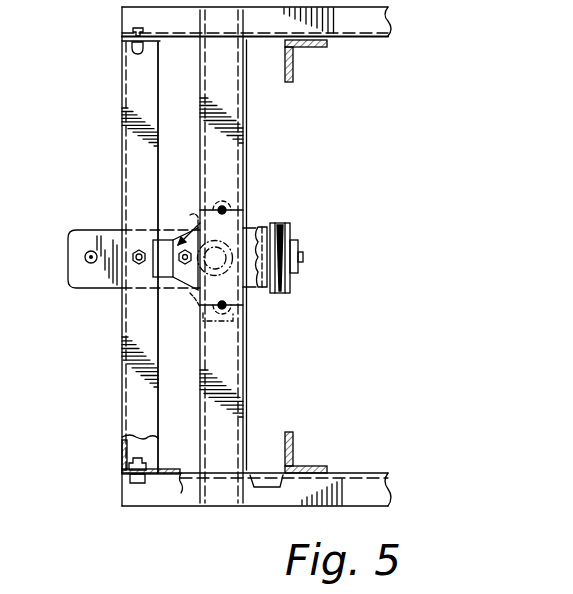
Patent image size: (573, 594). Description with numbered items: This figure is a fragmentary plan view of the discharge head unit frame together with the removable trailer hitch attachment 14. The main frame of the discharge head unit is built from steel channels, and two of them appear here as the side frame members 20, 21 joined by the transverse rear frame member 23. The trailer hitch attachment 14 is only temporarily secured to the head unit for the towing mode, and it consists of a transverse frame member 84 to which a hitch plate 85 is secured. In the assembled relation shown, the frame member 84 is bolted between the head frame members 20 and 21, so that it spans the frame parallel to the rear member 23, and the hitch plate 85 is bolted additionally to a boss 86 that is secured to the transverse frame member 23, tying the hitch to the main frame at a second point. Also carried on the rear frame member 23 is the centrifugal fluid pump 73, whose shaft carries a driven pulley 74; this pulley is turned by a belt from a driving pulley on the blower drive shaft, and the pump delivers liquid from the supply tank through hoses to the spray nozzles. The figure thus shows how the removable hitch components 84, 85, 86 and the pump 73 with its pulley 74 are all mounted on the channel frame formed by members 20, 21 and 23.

The trailer hitch attachment 14 is at (120, 147).
The side frame member 21 is at (362, 32).
The side frame member 20 is at (358, 487).
The rear frame member 23 is at (220, 138).
The centrifugal fluid pump 73 is at (260, 230).
The driven pulley 74 is at (282, 277).
The transverse frame member 84 is at (132, 388).
The hitch plate 85 is at (77, 279).
The boss 86 is at (180, 232).